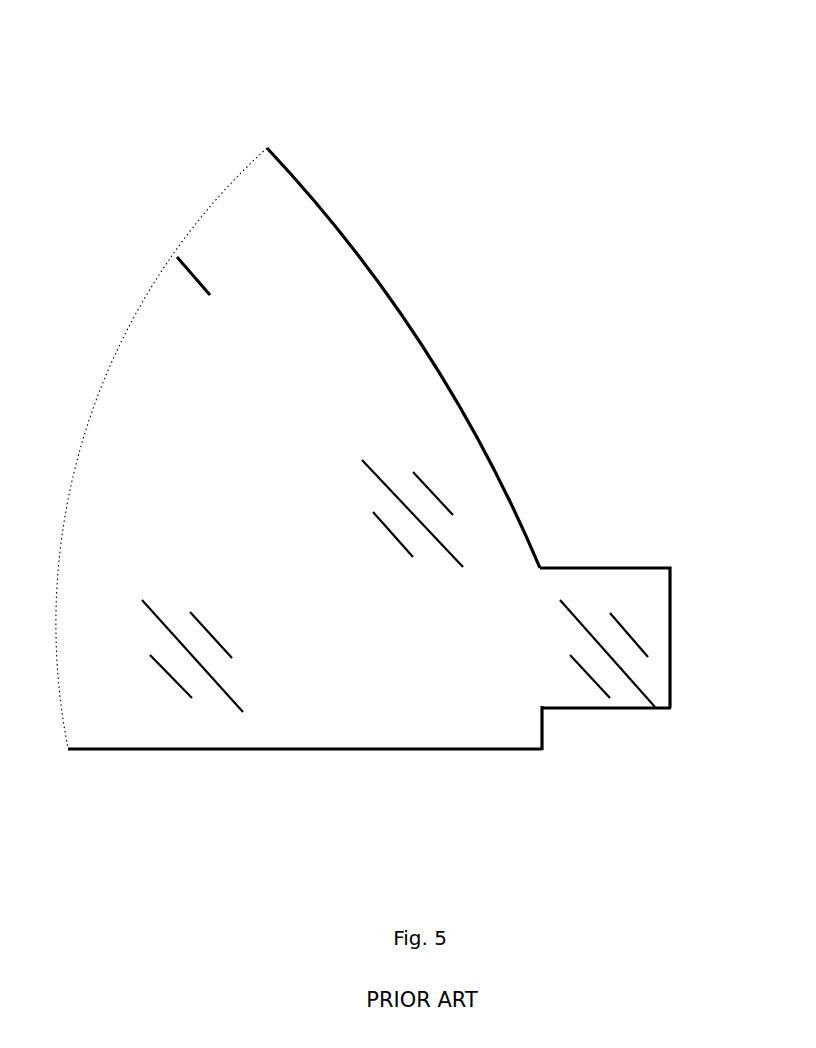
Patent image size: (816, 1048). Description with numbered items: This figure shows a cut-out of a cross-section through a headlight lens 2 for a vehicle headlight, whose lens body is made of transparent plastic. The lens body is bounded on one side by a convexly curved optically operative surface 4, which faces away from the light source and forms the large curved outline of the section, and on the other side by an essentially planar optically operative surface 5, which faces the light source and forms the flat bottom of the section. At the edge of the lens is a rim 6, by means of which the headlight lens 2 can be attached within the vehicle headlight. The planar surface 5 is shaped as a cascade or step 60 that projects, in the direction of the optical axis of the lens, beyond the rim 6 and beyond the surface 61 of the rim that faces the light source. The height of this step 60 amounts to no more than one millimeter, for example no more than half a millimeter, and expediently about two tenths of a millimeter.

The headlight lens 2 is at (646, 130).
The convexly curved optically operative surface 4 is at (404, 316).
The essentially planar optically operative surface 5 is at (298, 750).
The rim 6 is at (609, 598).
The step 60 is at (552, 740).
The surface of the rim 61 is at (612, 710).